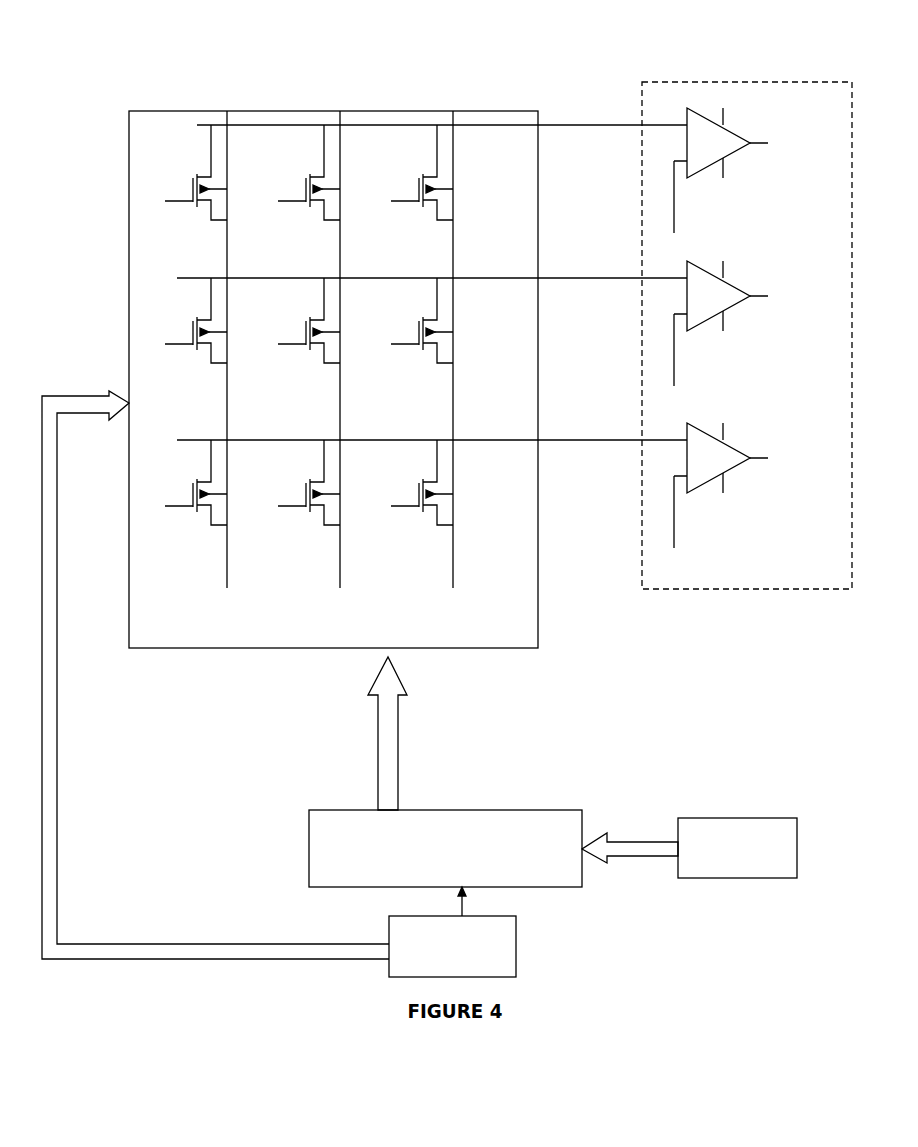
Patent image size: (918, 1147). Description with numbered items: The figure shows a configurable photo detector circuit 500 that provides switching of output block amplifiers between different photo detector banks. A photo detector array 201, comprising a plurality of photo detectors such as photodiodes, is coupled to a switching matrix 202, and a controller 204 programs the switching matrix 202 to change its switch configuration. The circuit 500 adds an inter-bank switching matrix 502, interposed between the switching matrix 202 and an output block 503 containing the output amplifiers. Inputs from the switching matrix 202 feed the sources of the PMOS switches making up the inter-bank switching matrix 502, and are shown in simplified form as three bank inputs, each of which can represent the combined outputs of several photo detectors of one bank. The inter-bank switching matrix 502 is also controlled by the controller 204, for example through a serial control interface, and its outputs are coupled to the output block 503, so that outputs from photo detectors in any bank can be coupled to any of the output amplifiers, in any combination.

The configurable photo detector circuit 500 is at (773, 730).
The inter-bank switching matrix 502 is at (501, 111).
The output block 503 is at (737, 82).
The switching matrix 202 is at (476, 810).
The photo detector array 201 is at (717, 818).
The controller 204 is at (516, 923).